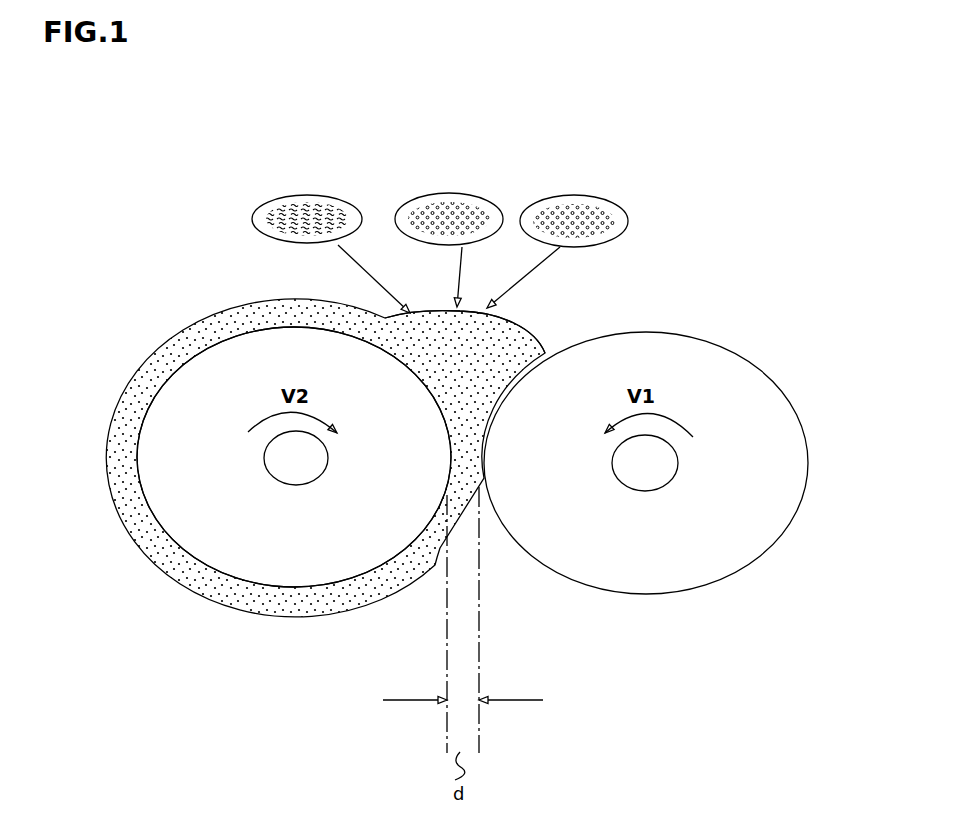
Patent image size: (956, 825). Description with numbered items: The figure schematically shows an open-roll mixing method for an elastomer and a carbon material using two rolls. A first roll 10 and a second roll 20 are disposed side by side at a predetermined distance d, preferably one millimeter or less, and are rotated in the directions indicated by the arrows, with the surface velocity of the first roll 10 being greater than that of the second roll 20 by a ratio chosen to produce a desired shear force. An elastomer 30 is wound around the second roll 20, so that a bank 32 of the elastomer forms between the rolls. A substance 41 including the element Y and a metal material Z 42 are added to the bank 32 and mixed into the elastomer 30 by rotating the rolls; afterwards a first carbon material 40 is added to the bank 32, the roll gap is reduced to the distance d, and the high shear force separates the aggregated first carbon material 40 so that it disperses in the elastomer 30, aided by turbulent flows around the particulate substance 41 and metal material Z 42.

The first roll 10 is at (725, 530).
The second roll 20 is at (215, 525).
The elastomer 30 is at (237, 322).
The bank 32 is at (490, 340).
The first carbon material 40 is at (310, 207).
The substance including the element Y 41 is at (578, 207).
The metal material Z 42 is at (455, 207).